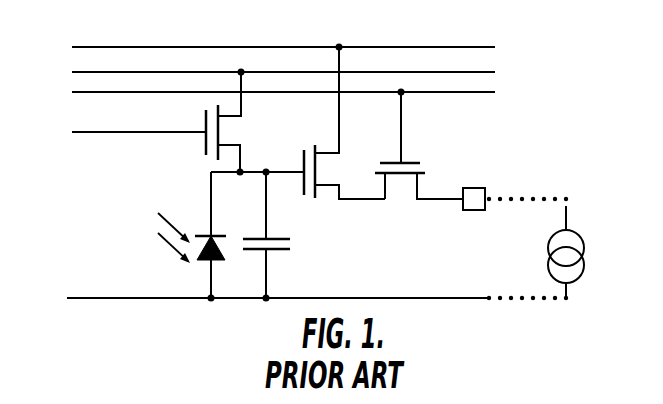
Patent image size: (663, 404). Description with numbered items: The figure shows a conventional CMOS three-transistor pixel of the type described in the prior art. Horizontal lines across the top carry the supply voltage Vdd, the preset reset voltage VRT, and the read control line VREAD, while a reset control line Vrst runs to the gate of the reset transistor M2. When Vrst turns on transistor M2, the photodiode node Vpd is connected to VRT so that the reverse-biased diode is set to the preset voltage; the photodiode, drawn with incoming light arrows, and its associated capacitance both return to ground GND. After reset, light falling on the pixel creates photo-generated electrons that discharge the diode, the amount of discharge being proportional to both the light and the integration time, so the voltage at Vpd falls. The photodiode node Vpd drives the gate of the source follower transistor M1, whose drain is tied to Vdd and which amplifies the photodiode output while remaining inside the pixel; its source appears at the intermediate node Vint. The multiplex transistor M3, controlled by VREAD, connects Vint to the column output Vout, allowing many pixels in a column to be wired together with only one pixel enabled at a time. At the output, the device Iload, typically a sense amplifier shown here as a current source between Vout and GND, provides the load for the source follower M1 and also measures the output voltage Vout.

The source follower transistor M1 is at (344, 122).
The reset transistor M2 is at (240, 121).
The multiplex transistor M3 is at (419, 144).
The photodiode voltage Vpd is at (192, 234).
The intermediate node Vint is at (366, 202).
The output voltage Vout is at (515, 187).
The load device Iload is at (561, 253).
The supply voltage line Vdd is at (266, 37).
The reset voltage VRT is at (266, 67).
The read line VREAD is at (254, 92).
The reset control line Vrst is at (121, 125).
The ground GND is at (277, 282).